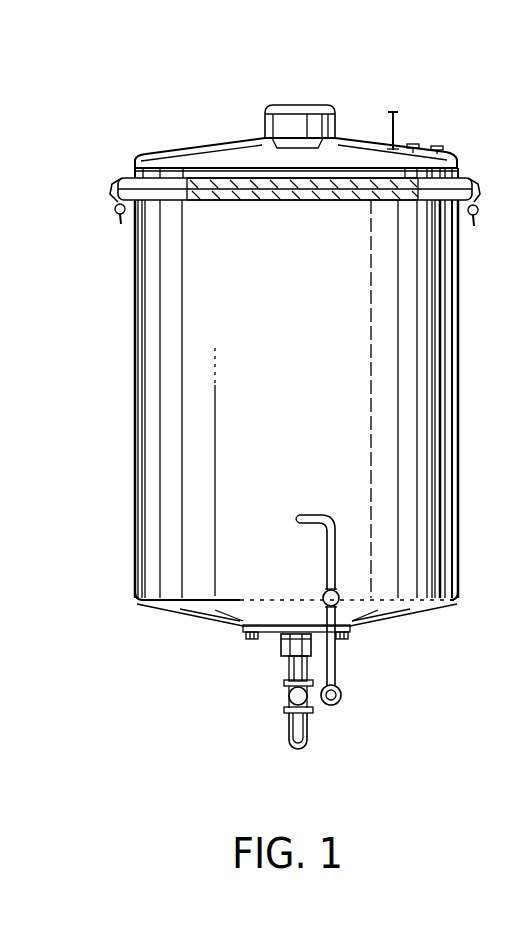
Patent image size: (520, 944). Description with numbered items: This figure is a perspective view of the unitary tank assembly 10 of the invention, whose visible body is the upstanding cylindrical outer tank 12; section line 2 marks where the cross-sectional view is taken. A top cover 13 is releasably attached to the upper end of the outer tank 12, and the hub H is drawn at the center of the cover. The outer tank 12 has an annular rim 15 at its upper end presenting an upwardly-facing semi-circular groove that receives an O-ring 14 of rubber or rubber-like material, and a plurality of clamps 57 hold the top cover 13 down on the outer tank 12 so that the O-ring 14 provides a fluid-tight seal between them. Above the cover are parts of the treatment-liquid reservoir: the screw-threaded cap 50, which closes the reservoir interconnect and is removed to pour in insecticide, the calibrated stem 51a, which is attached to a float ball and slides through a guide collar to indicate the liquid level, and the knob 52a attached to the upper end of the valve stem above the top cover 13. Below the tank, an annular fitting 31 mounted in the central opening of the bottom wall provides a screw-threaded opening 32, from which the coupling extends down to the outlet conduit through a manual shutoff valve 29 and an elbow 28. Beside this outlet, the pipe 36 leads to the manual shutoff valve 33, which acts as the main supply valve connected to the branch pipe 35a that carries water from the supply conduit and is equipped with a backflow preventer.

The section line 2- 2 is at (262, 85).
The unitary tank assembly 10 is at (462, 318).
The outer tank 12 is at (133, 298).
The top cover 13 is at (188, 146).
The hub H is at (283, 147).
The O-ring 14 is at (175, 193).
The annular rim 15 is at (275, 197).
The screw-threaded cap 50 is at (443, 148).
The calibrated stem 51a is at (392, 110).
The knob 52a is at (415, 144).
The clamps 57 is at (111, 199).
The pipe 36 is at (300, 514).
The manual shutoff valve 33 is at (336, 592).
The branch pipe 35a is at (343, 693).
The screw-threaded opening 32 is at (282, 650).
The annular fitting 31 is at (288, 675).
The manual shutoff valve 29 is at (289, 698).
The elbow 28 is at (311, 741).